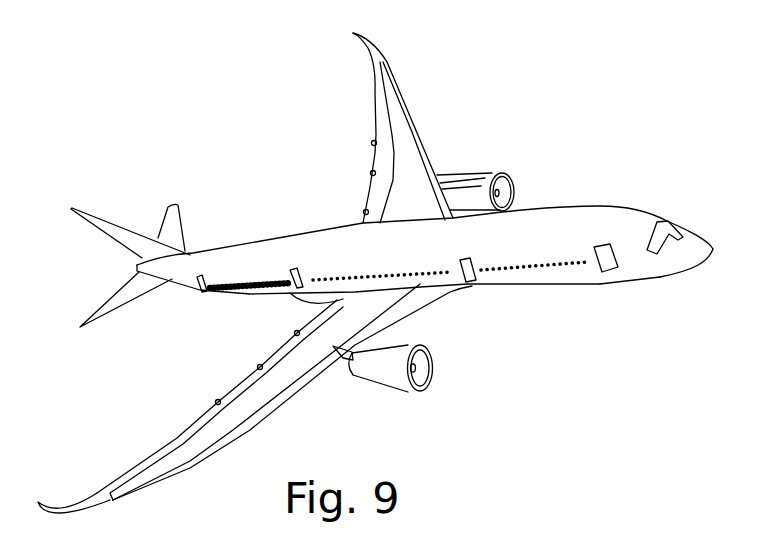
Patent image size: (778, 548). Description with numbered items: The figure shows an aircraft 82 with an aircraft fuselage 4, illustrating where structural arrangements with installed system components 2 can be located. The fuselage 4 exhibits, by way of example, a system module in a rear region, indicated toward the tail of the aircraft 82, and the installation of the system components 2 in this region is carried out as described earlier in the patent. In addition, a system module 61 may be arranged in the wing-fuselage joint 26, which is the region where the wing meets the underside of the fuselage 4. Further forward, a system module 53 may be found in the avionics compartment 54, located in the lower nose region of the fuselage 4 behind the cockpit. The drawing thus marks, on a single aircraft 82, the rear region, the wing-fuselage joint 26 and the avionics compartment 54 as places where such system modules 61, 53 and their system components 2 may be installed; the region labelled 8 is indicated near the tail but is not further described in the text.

The aircraft 82 is at (375, 273).
The system components 2 is at (186, 304).
The aircraft fuselage 4 is at (654, 216).
The rear fuselage section 8 is at (176, 299).
The wing-fuselage joint 26 is at (469, 309).
The system module 61 is at (456, 309).
The avionics compartment 54 is at (644, 291).
The system module 53 is at (649, 299).